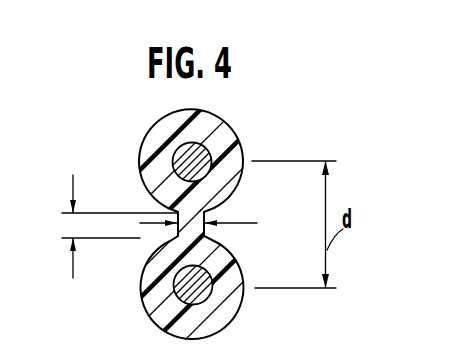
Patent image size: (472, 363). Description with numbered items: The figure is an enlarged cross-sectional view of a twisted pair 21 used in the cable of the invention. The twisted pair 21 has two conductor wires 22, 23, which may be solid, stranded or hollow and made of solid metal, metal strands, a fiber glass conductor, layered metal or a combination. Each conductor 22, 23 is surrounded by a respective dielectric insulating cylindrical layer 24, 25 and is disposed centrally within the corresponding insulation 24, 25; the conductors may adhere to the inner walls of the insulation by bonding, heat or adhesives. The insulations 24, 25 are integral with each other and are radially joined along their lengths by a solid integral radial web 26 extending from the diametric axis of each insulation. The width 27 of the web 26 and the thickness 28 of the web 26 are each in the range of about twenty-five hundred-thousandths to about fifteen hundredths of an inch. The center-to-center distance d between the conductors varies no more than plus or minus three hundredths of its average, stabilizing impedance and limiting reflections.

The twisted pair 21 is at (263, 145).
The conductor wire 22 is at (209, 146).
The conductor wire 23 is at (241, 321).
The insulating cylindrical layer 24 is at (168, 132).
The insulating cylindrical layer 25 is at (153, 298).
The radial web 26 is at (170, 241).
The width of the web 27 is at (72, 262).
The thickness of the web 28 is at (249, 223).